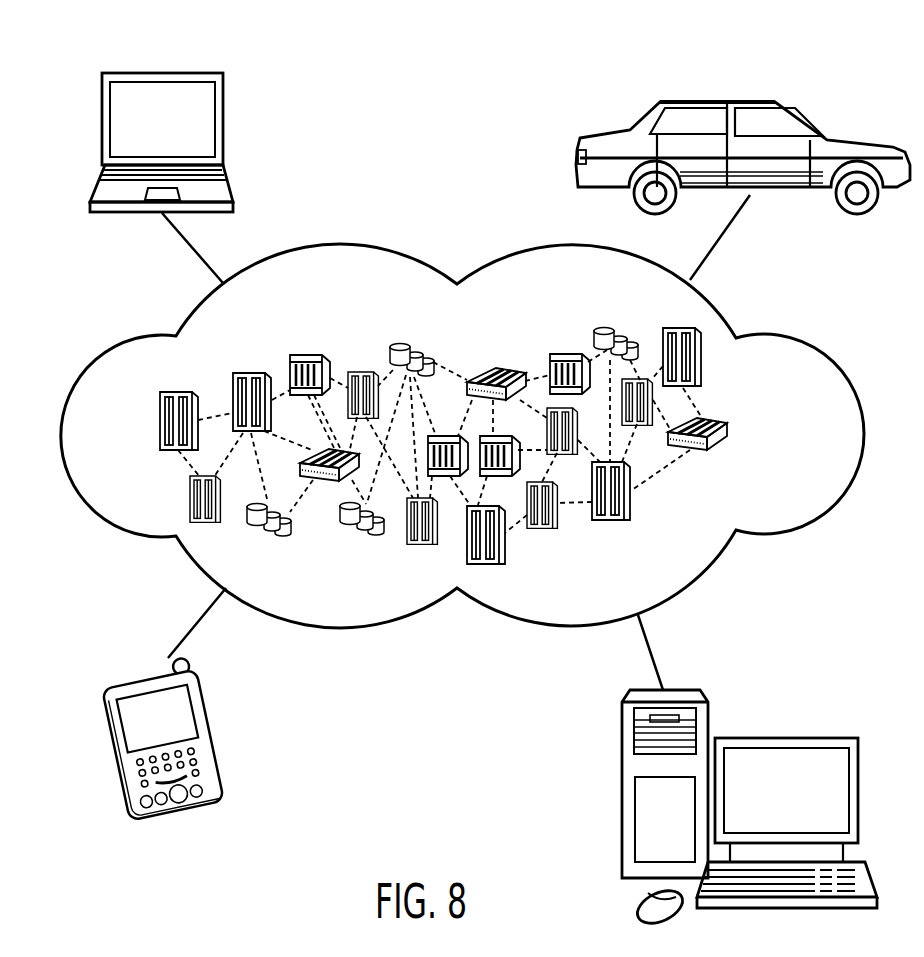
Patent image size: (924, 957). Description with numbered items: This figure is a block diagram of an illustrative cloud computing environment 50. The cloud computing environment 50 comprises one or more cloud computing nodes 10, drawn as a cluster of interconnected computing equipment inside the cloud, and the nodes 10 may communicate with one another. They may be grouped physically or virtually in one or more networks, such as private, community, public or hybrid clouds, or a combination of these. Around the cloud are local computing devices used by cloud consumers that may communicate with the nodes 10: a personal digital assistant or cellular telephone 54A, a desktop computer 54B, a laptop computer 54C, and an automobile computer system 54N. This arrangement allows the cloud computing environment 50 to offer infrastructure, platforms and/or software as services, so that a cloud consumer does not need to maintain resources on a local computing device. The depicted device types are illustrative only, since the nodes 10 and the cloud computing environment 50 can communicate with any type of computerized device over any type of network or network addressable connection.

The cloud computing node 10 is at (738, 438).
The cloud computing environment 50 is at (800, 342).
The personal digital assistant or cellular telephone 54A is at (141, 672).
The desktop computer 54B is at (787, 738).
The laptop computer 54C is at (162, 73).
The automobile computer system 54N is at (722, 100).